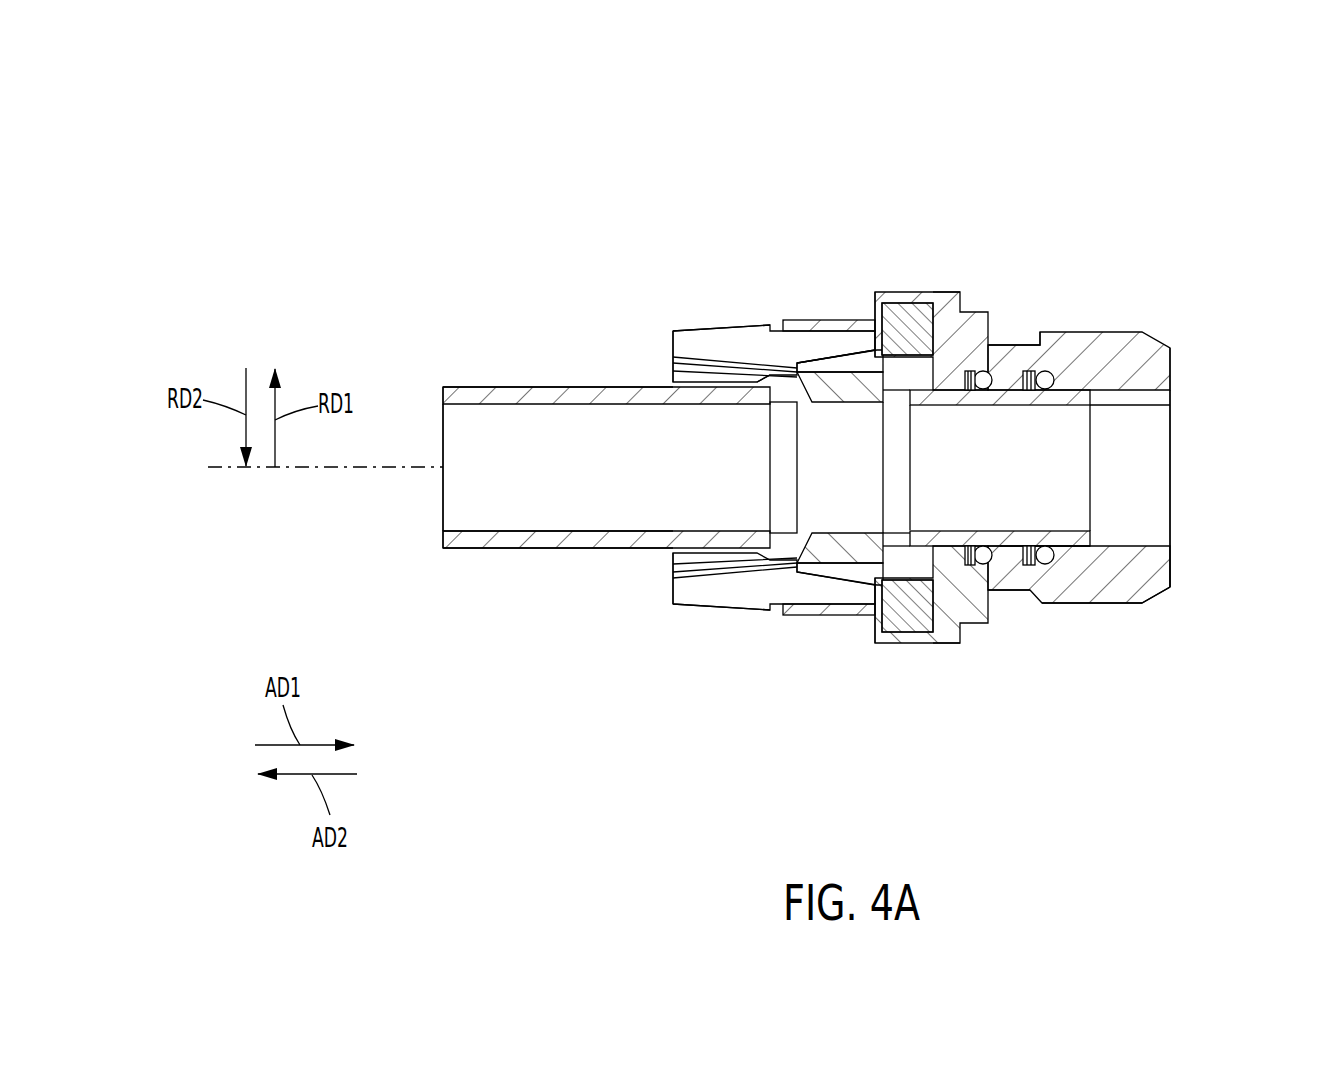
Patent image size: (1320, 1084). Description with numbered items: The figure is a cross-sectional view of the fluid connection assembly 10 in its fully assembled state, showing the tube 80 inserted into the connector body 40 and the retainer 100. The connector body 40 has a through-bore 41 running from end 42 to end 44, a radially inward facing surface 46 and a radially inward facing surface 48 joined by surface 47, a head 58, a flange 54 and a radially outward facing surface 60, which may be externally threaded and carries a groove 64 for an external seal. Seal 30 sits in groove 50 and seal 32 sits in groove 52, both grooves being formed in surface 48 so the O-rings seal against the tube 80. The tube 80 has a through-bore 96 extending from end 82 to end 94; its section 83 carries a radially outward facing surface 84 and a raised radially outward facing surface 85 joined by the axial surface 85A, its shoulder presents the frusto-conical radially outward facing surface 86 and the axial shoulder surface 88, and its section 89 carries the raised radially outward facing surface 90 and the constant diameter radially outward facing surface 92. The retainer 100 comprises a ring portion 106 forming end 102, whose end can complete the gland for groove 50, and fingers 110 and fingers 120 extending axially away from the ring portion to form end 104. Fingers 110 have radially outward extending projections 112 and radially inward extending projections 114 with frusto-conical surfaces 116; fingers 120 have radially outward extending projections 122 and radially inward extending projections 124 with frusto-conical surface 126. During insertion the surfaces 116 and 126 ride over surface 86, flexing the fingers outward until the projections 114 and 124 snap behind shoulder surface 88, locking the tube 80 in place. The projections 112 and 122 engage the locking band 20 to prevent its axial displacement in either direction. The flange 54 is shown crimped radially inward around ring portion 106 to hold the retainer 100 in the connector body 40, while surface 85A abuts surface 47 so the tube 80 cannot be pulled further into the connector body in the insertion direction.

The fluid connection assembly 10 is at (258, 158).
The locking band 20 is at (843, 325).
The seal 30 is at (985, 368).
The seal 32 is at (1045, 368).
The connector body 40 is at (1165, 366).
The through-bore 41 is at (1149, 465).
The end 42 is at (1172, 565).
The end 44 is at (865, 620).
The radially inward facing surface 46 is at (912, 292).
The surface 47 is at (940, 583).
The radially inward facing surface 48 is at (1135, 553).
The groove 50 is at (970, 368).
The groove 52 is at (1030, 370).
The flange 54 is at (935, 303).
The head 58 is at (948, 292).
The radially outward facing surface 60 is at (1140, 332).
The groove 64 is at (997, 347).
The tube 80 is at (528, 398).
The end 82 is at (1092, 397).
The section 83 is at (1062, 553).
The radially outward facing surface 84 is at (1082, 545).
The radially outward facing surface 85 is at (913, 390).
The surface 85A is at (920, 540).
The radially outward facing surface 86 is at (853, 382).
The shoulder surface 88 is at (798, 400).
The section 89 is at (510, 579).
The radially outward facing surface 90 is at (758, 387).
The radially outward facing surface 92 is at (470, 388).
The end 94 is at (443, 543).
The through-bore 96 is at (471, 448).
The retainer 100 is at (693, 330).
The end 102 is at (953, 630).
The end 104 is at (673, 345).
The ring portion 106 is at (912, 628).
The fingers 110 is at (728, 330).
The radially outward extending projection 112 is at (778, 328).
The radially inward extending projection 114 is at (797, 355).
The surfaces 116 is at (675, 360).
The fingers 120 is at (733, 593).
The radially outward extending projection 122 is at (680, 610).
The radially inward extending projection 124 is at (787, 575).
The surface 126 is at (673, 575).